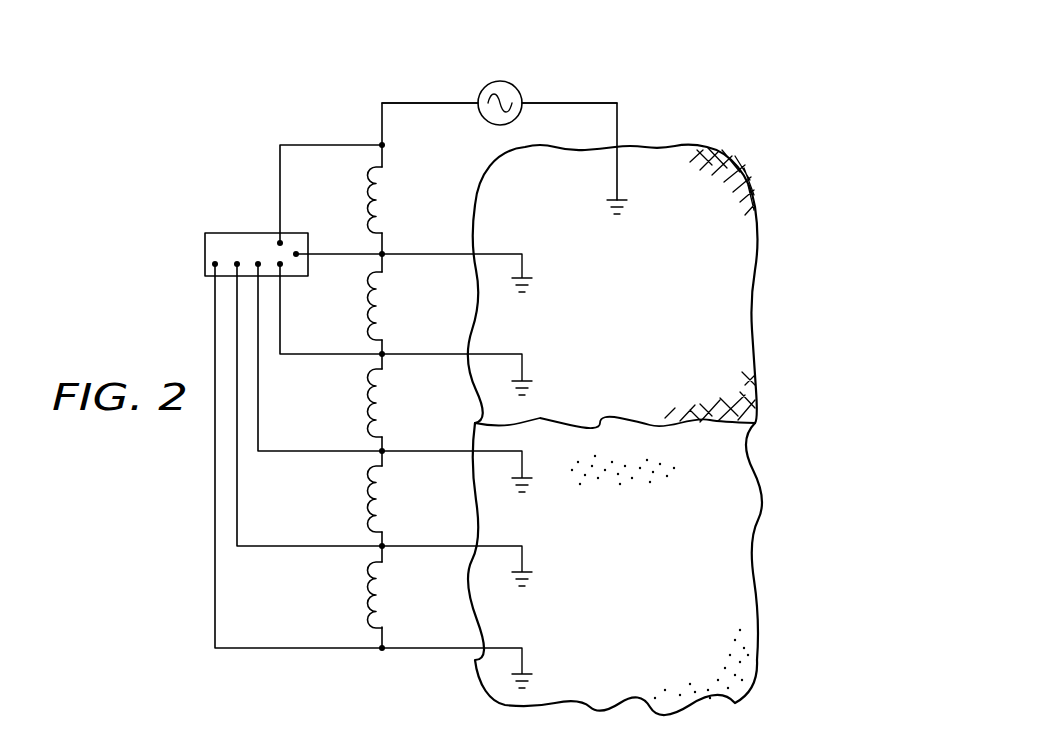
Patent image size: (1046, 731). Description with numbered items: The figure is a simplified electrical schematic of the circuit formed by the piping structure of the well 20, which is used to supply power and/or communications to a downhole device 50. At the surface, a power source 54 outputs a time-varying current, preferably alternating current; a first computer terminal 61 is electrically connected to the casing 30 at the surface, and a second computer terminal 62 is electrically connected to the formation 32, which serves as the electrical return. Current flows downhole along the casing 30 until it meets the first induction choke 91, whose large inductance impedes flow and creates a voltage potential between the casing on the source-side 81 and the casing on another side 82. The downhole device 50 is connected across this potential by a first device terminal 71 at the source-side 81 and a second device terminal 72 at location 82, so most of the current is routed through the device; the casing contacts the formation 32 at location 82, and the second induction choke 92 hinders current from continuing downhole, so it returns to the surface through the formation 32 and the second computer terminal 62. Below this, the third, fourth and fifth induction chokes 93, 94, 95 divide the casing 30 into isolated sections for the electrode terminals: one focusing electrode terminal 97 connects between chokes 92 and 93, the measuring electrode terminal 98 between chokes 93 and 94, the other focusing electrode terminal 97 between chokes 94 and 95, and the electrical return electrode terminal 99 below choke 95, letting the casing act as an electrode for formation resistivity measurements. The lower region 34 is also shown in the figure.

The well 20 is at (663, 64).
The casing 30 is at (380, 127).
The formation 32 is at (626, 326).
The lower plasma region 34 is at (626, 576).
The downhole device 50 is at (203, 254).
The surface power source 54 is at (500, 81).
The first computer terminal 61 is at (431, 102).
The second computer terminal 62 is at (571, 102).
The first device terminal 71 is at (279, 177).
The second device terminal 72 is at (342, 252).
The source-side 81 is at (396, 150).
The another side 82 is at (396, 248).
The first induction choke 91 is at (385, 196).
The second induction choke 92 is at (385, 301).
The third induction choke 93 is at (385, 411).
The fourth induction choke 94 is at (385, 509).
The fifth induction choke 95 is at (385, 601).
The focusing electrode terminal 97 is at (307, 357).
The measuring electrode terminal 98 is at (294, 453).
The electrical return electrode terminal 99 is at (258, 650).